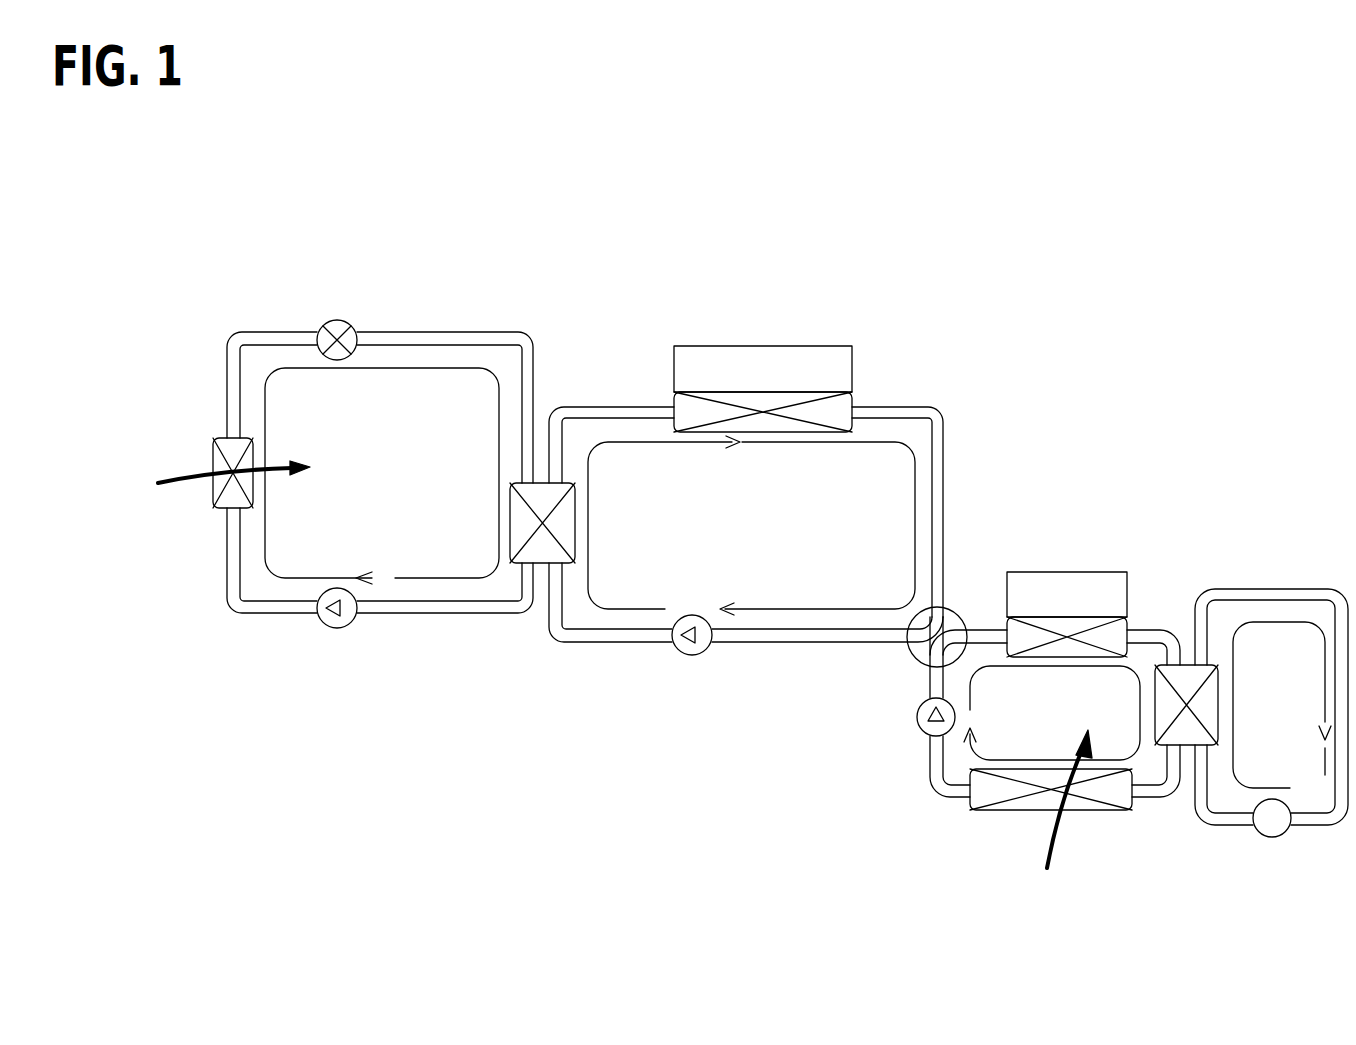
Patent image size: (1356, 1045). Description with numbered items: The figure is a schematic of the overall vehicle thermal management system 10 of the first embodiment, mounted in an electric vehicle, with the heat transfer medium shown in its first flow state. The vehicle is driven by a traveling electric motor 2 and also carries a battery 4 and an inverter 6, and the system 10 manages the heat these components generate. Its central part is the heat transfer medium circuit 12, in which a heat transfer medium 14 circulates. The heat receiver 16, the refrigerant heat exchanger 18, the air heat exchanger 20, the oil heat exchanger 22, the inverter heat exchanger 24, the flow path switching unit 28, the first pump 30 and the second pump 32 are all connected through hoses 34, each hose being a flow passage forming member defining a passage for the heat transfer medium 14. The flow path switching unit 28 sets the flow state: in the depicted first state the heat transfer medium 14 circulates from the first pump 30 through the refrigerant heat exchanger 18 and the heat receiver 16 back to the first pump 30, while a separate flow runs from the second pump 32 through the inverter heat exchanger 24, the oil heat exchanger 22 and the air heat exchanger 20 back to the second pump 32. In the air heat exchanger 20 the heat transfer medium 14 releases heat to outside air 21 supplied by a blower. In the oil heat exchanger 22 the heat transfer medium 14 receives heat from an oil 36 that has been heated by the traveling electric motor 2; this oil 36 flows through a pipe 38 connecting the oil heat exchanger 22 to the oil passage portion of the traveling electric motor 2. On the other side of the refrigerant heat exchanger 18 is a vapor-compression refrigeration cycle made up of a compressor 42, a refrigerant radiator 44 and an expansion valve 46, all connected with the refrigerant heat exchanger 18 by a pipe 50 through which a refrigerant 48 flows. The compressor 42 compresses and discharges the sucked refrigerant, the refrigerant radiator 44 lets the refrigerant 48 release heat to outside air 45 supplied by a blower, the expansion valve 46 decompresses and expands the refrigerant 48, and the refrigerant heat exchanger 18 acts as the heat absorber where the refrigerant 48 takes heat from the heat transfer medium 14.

The traveling electric motor 2 is at (1272, 840).
The battery 4 is at (830, 357).
The inverter 6 is at (1108, 585).
The vehicle thermal management system 10 is at (222, 250).
The heat transfer medium circuit 12 is at (940, 412).
The heat transfer medium 14 is at (912, 510).
The heat receiver 16 is at (763, 410).
The refrigerant heat exchanger 18 is at (566, 483).
The air heat exchanger 20 is at (1010, 810).
The air 21 is at (1048, 872).
The oil heat exchanger 22 is at (1168, 748).
The inverter heat exchanger 24 is at (1060, 625).
The flow path switching unit 28 is at (965, 612).
The first pump 30 is at (692, 657).
The second pump 32 is at (920, 732).
The hoses 34 is at (946, 436).
The oil 36 is at (1323, 672).
The pipe 38 is at (1310, 589).
The compressor 42 is at (337, 630).
The refrigerant radiator 44 is at (213, 452).
The air 45 is at (165, 477).
The expansion valve 46 is at (340, 320).
The refrigerant 48 is at (498, 406).
The pipe 50 is at (277, 332).